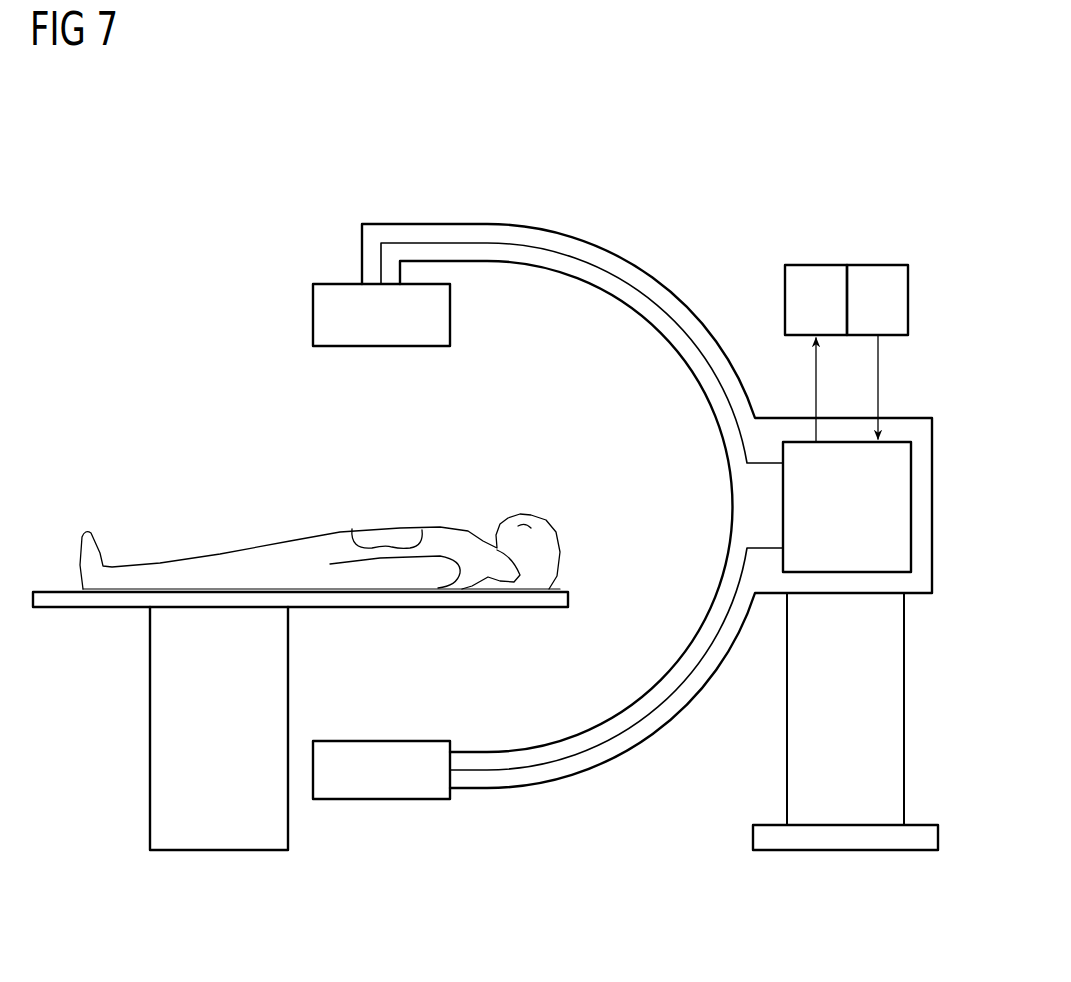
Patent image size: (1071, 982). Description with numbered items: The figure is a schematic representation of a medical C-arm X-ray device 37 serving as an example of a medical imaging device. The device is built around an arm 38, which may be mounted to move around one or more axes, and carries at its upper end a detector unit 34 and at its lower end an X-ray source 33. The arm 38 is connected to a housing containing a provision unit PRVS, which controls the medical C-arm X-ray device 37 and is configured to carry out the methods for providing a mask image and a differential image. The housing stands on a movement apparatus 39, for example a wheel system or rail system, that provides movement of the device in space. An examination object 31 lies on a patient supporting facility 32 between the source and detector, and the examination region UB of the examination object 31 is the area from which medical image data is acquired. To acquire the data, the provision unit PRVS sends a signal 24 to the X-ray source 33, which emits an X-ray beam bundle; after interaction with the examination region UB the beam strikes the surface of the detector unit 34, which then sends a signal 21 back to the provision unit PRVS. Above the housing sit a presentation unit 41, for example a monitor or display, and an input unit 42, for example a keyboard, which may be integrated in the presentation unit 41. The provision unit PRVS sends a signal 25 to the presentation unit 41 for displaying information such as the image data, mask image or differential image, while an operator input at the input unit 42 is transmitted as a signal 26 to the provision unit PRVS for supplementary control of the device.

The signal 21 is at (456, 242).
The signal 24 is at (502, 771).
The signal 25 is at (812, 383).
The signal 26 is at (882, 372).
The examination object 31 is at (258, 540).
The patient supporting facility 32 is at (216, 872).
The X-ray source 33 is at (382, 800).
The detector unit 34 is at (332, 283).
The medical C-arm X-ray device 37 is at (612, 207).
The arm 38 is at (400, 223).
The movement apparatus 39 is at (847, 851).
The presentation unit 41 is at (818, 264).
The input unit 42 is at (882, 264).
The provision unit PRVS is at (833, 573).
The examination region UB is at (392, 533).